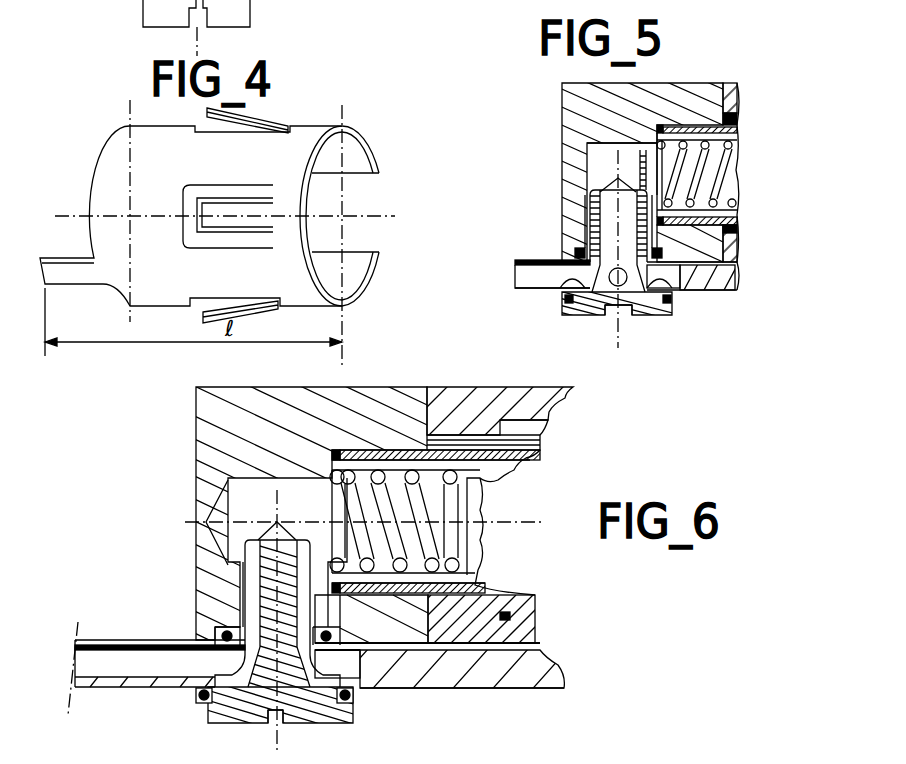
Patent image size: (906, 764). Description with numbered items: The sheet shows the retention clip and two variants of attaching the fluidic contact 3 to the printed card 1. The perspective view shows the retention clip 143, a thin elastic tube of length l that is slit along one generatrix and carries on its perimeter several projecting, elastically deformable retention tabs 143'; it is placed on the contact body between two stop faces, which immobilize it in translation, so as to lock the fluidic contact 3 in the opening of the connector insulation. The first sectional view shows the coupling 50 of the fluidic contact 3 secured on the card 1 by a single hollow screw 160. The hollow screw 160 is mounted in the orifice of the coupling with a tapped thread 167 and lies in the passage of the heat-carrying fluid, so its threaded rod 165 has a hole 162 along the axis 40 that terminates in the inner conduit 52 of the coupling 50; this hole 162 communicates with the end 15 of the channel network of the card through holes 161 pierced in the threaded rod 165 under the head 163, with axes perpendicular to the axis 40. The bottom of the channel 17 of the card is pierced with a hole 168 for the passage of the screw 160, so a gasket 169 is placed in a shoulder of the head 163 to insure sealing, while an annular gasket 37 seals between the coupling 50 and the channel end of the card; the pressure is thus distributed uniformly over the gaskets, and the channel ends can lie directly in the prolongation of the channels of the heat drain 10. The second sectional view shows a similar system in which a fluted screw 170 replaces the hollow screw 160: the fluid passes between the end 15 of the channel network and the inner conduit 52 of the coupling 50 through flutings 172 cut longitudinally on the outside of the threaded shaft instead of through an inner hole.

In FIG. 5, the printed card 1 is at (522, 258).
In FIG. 6, the printed card 1 is at (501, 670).
In FIG. 6, the fluidic contact 3 is at (488, 387).
In FIG. 5, the heat drain 10 is at (712, 292).
In FIG. 6, the heat drain 10 is at (446, 678).
In FIG. 5, the end of the channel network 15 is at (672, 291).
In FIG. 6, the end of the channel network 15 is at (355, 669).
In FIG. 5, the channel 17 is at (519, 292).
In FIG. 6, the channel 17 is at (106, 668).
In FIG. 5, the annular gasket 37 is at (668, 258).
In FIG. 6, the annular gasket 37 is at (357, 643).
In FIG. 5, the axis 40 is at (632, 328).
In FIG. 6, the axis 40 is at (300, 738).
In FIG. 5, the coupling 50 is at (566, 86).
In FIG. 6, the coupling 50 is at (196, 405).
In FIG. 5, the inner conduit 52 is at (622, 170).
In FIG. 6, the inner conduit 52 is at (258, 479).
In FIG. 4, the retention clip 143 is at (217, 224).
In FIG. 4, the retention tabs 143' is at (207, 317).
In FIG. 5, the hollow screw 160 is at (593, 318).
In FIG. 5, the holes 161 is at (616, 267).
In FIG. 5, the hole 162 is at (603, 232).
In FIG. 5, the head 163 is at (617, 314).
In FIG. 5, the threaded rod 165 is at (624, 169).
In FIG. 5, the tapped thread 167 is at (578, 210).
In FIG. 6, the tapped thread 167 is at (246, 574).
In FIG. 5, the hole 168 is at (566, 300).
In FIG. 6, the hole 168 is at (232, 669).
In FIG. 5, the gasket 169 is at (570, 311).
In FIG. 6, the gasket 169 is at (191, 695).
In FIG. 6, the fluted screw 170 is at (225, 729).
In FIG. 6, the flutings 172 is at (225, 628).